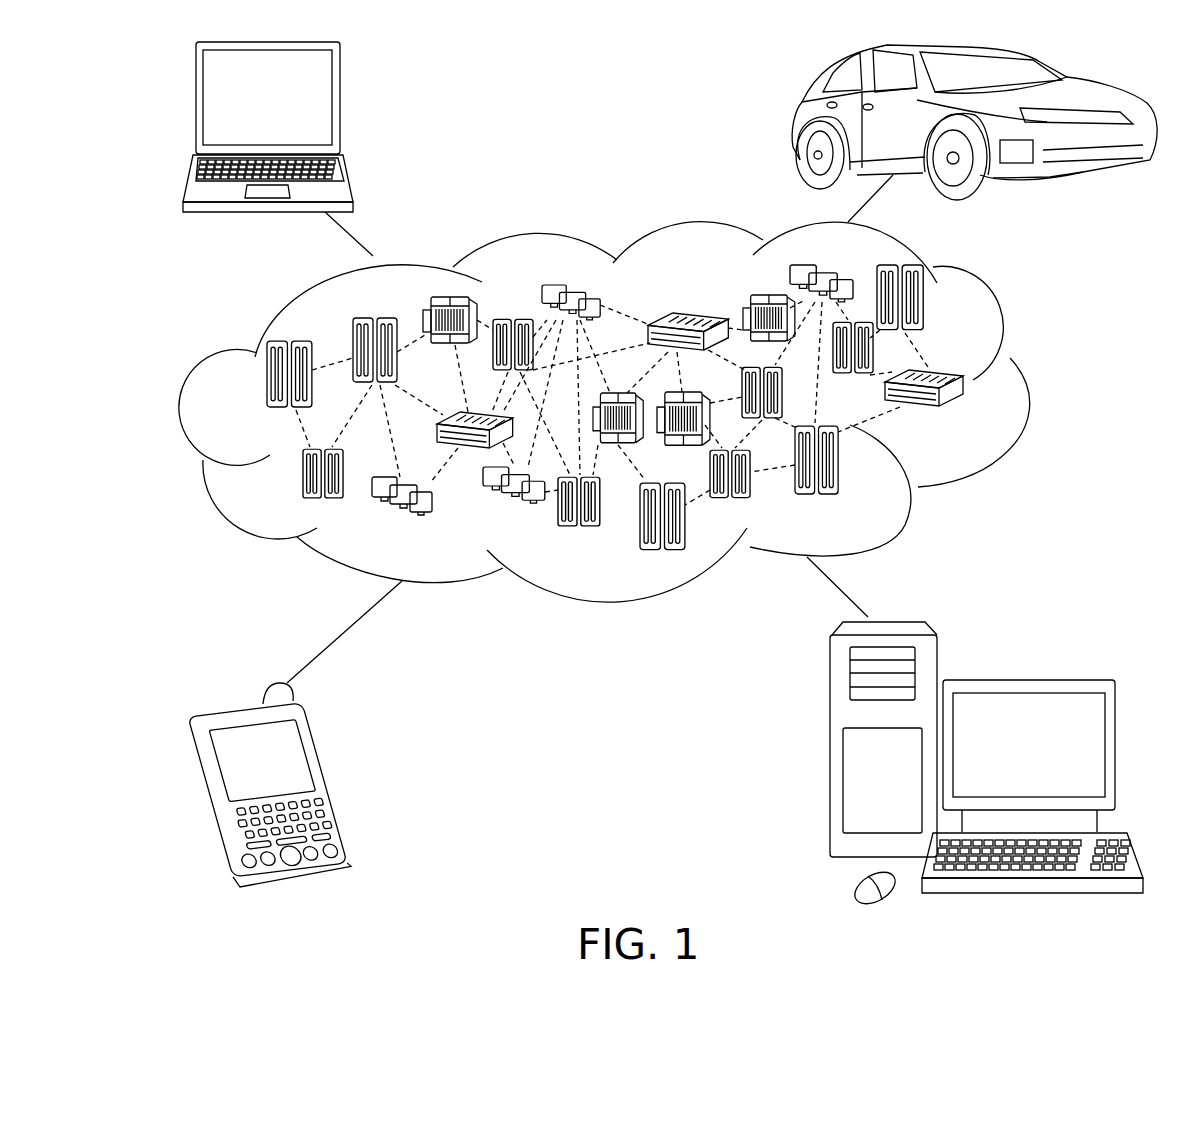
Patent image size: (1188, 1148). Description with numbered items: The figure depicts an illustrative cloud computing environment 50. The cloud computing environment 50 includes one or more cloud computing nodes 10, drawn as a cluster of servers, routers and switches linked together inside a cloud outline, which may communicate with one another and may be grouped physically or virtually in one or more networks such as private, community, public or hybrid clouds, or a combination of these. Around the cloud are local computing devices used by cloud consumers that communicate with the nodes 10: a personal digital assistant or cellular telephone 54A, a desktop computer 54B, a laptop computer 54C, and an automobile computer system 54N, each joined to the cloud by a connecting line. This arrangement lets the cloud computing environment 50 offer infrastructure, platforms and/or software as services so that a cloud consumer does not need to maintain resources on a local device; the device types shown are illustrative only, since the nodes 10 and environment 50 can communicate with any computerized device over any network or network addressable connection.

The cloud computing node 10 is at (972, 418).
The cloud computing environment 50 is at (1030, 384).
The personal digital assistant or cellular telephone 54A is at (330, 775).
The desktop computer 54B is at (1028, 679).
The laptop computer 54C is at (340, 105).
The automobile computer system 54N is at (798, 120).